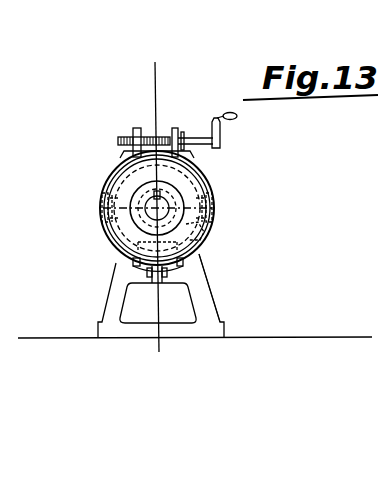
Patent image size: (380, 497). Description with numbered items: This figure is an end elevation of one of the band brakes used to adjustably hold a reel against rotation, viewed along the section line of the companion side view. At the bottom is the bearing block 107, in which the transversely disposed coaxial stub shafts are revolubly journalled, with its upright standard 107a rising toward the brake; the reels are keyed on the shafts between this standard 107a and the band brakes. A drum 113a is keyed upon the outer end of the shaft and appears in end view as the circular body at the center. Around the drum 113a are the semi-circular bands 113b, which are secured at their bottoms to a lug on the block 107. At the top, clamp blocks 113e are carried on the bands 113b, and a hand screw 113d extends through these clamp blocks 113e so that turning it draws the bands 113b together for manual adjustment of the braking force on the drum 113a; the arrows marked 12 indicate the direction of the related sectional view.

The section line 12 is at (153, 83).
The bearing block 107 is at (97, 328).
The standard 107a is at (206, 290).
The drum 113a is at (196, 227).
The semi-circular band 113b is at (100, 202).
The hand screw 113d is at (157, 277).
The clamp block 113e is at (140, 130).